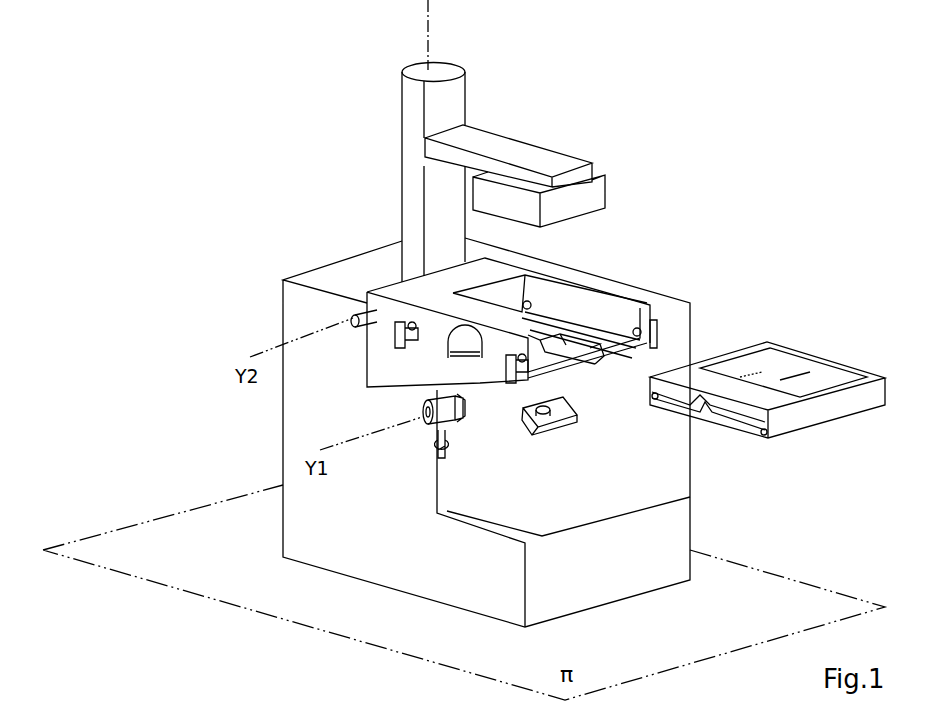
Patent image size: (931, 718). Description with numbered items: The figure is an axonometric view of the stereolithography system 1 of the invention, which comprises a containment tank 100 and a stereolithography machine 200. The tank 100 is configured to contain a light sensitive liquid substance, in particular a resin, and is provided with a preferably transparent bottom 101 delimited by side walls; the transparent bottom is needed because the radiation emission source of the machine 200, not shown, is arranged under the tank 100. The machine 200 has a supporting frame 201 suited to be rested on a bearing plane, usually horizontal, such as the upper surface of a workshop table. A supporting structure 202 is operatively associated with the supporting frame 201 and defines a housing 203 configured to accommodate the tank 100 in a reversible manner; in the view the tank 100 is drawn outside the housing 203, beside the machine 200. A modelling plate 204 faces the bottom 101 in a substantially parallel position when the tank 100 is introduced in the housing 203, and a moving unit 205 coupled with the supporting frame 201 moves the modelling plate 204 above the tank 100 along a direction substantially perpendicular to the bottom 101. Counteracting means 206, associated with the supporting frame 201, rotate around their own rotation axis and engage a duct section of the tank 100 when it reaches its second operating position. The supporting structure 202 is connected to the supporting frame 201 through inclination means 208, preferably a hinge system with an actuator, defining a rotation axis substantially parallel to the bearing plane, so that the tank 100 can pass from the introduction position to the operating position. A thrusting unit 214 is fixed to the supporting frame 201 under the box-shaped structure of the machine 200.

The stereolithography system 1 is at (588, 68).
The containment tank 100 is at (815, 330).
The bottom 101 is at (792, 388).
The stereolithography machine 200 is at (358, 100).
The supporting frame 201 is at (650, 612).
The supporting structure 202 is at (393, 272).
The housing 203 is at (590, 340).
The modelling plate 204 is at (610, 155).
The moving unit 205 is at (440, 72).
The counteracting means 206 is at (425, 428).
The inclination means 208 is at (347, 313).
The thrusting unit 214 is at (560, 442).